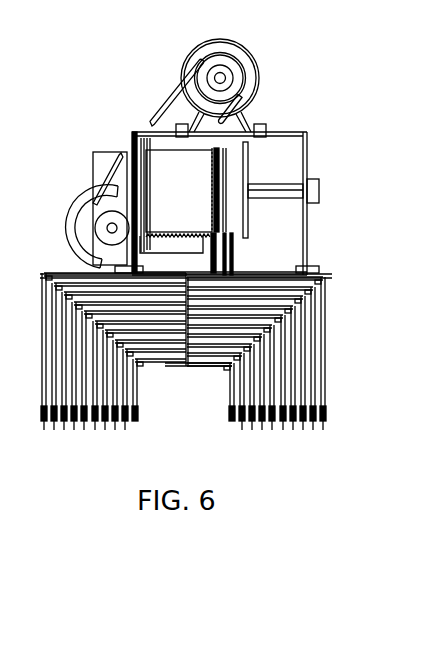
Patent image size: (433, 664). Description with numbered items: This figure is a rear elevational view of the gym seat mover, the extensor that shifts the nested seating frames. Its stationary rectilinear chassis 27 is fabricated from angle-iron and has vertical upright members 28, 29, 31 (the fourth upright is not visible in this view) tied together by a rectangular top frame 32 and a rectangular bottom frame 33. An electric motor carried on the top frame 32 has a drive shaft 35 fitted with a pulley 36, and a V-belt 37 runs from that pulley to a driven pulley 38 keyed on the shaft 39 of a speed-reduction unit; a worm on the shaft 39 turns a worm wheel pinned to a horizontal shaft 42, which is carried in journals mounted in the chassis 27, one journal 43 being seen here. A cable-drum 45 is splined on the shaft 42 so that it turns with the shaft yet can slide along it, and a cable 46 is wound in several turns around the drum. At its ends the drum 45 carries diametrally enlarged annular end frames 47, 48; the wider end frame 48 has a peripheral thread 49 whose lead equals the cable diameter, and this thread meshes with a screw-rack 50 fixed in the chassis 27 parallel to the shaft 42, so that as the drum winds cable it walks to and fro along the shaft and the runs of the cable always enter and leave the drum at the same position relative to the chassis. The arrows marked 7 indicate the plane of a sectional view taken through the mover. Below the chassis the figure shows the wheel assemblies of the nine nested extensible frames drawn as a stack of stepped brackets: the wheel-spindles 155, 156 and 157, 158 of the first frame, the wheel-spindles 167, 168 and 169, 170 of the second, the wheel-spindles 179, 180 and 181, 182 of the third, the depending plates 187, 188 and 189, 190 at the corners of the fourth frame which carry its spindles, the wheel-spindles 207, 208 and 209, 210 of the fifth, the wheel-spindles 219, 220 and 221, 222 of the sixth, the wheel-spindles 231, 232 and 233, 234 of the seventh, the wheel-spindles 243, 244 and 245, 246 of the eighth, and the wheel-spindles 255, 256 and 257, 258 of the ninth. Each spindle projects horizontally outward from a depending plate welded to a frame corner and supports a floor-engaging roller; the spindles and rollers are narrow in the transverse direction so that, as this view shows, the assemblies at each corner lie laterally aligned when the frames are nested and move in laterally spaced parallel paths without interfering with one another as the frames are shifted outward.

The section line 7- 7 is at (127, 266).
The chassis 27 is at (312, 152).
The vertical upright member 28 is at (308, 228).
The vertical upright member 29 is at (132, 138).
The vertical upright member 31 is at (290, 255).
The rectangular top frame 32 is at (293, 132).
The rectangular bottom frame 33 is at (316, 272).
The drive shaft 35 is at (226, 75).
The pulley 36 is at (214, 55).
The V-belt 37 is at (166, 110).
The driven pulley 38 is at (72, 222).
The shaft 39 is at (112, 228).
The shaft 42 is at (272, 183).
The journal 43 is at (320, 180).
The cable-drum 45 is at (236, 237).
The cable 46 is at (212, 175).
The annular end frame 47 is at (250, 216).
The annular end frame 48 is at (134, 131).
The peripheral thread 49 is at (153, 131).
The screw-rack 50 is at (164, 236).
The wheel-spindle 155 is at (107, 450).
The wheel-spindle 156 is at (44, 430).
The wheel-spindle 167 is at (114, 443).
The wheel-spindle 168 is at (54, 430).
The wheel-spindle 179 is at (122, 435).
The wheel-spindle 180 is at (64, 430).
The depending plate 187 is at (127, 426).
The depending plate 188 is at (74, 430).
The wheel-spindle 207 is at (133, 421).
The wheel-spindle 208 is at (84, 430).
The wheel-spindle 219 is at (139, 407).
The wheel-spindle 220 is at (95, 430).
The wheel-spindle 231 is at (155, 404).
The wheel-spindle 232 is at (105, 430).
The wheel-spindle 243 is at (175, 398).
The wheel-spindle 244 is at (115, 430).
The wheel-spindle 255 is at (172, 390).
The wheel-spindle 256 is at (127, 432).
The wheel-spindle 157 is at (303, 371).
The wheel-spindle 158 is at (323, 430).
The wheel-spindle 169 is at (303, 386).
The wheel-spindle 170 is at (313, 430).
The wheel-spindle 181 is at (303, 401).
The wheel-spindle 182 is at (303, 430).
The depending plate 189 is at (308, 416).
The depending plate 190 is at (293, 430).
The wheel-spindle 209 is at (305, 429).
The wheel-spindle 210 is at (283, 430).
The wheel-spindle 221 is at (303, 449).
The wheel-spindle 222 is at (272, 430).
The wheel-spindle 233 is at (300, 467).
The wheel-spindle 234 is at (262, 430).
The wheel-spindle 245 is at (298, 484).
The wheel-spindle 246 is at (252, 430).
The wheel-spindle 257 is at (290, 500).
The wheel-spindle 258 is at (242, 430).